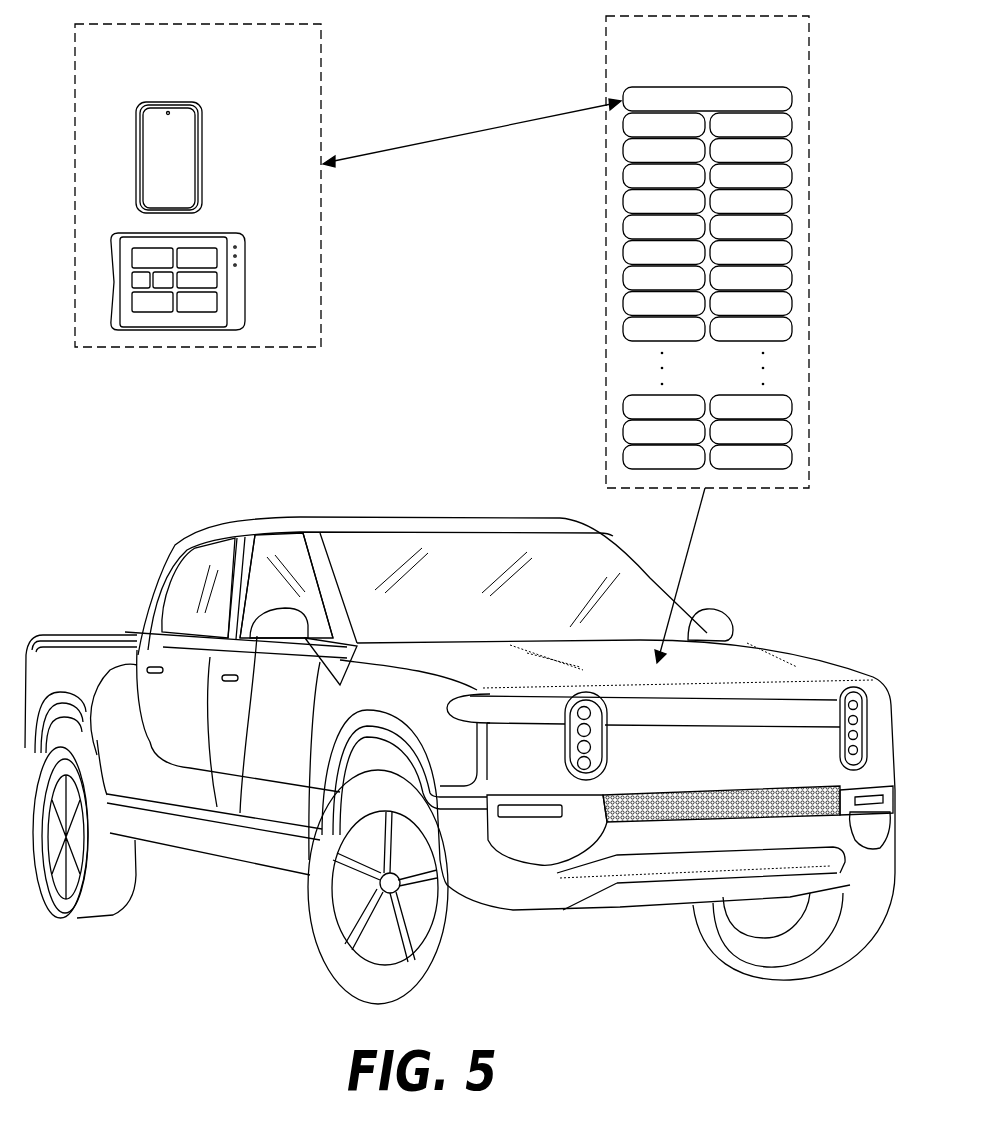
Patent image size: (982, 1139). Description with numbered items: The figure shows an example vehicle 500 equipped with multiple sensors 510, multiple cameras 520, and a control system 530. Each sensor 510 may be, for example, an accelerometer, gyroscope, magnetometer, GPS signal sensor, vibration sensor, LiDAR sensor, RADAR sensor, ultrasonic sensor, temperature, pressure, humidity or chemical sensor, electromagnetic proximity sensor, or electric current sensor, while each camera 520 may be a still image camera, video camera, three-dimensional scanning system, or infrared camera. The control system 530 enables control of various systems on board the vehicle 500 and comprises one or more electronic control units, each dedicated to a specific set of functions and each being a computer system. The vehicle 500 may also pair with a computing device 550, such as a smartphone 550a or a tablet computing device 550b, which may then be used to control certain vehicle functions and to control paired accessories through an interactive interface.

The vehicle 500 is at (148, 543).
The sensor 510 is at (29, 758).
The camera 520 is at (740, 768).
The control system 530 is at (697, 64).
The computing device 550 is at (178, 67).
The smartphone 550a is at (203, 157).
The tablet computing device 550b is at (246, 298).